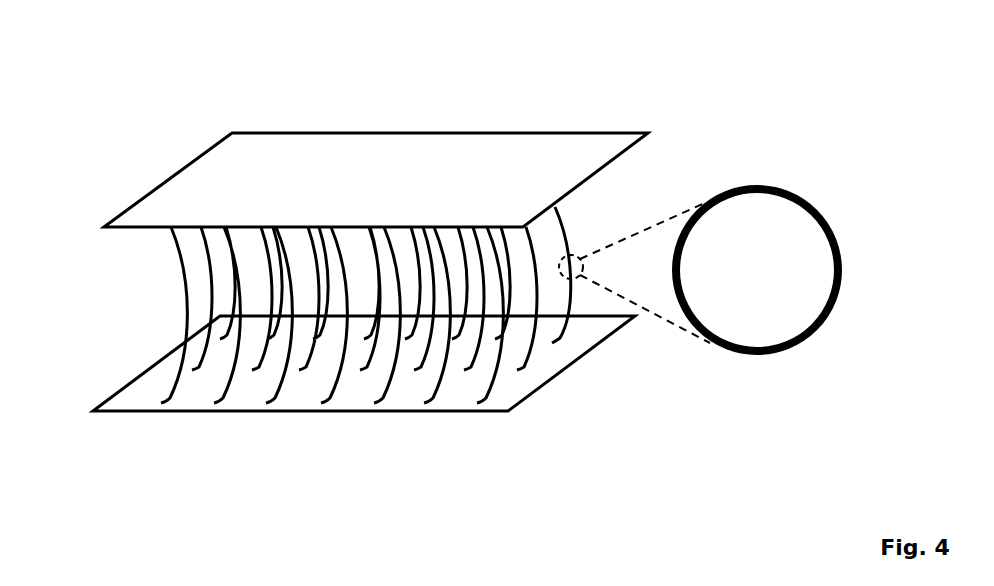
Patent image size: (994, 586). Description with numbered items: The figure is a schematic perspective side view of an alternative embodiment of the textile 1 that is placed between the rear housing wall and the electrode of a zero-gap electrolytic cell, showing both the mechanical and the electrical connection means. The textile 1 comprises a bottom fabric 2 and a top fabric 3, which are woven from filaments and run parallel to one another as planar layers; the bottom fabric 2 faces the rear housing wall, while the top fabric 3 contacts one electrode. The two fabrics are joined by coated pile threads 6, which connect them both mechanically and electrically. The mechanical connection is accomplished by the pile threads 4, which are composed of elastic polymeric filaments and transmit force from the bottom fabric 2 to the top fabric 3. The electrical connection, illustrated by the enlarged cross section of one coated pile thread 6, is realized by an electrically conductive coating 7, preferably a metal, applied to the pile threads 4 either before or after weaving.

The textile 1 is at (191, 130).
The bottom fabric 2 is at (146, 418).
The top fabric 3 is at (360, 194).
The pile threads 4 is at (748, 286).
The coated pile threads 6 is at (568, 220).
The electrically conductive coating 7 is at (781, 189).